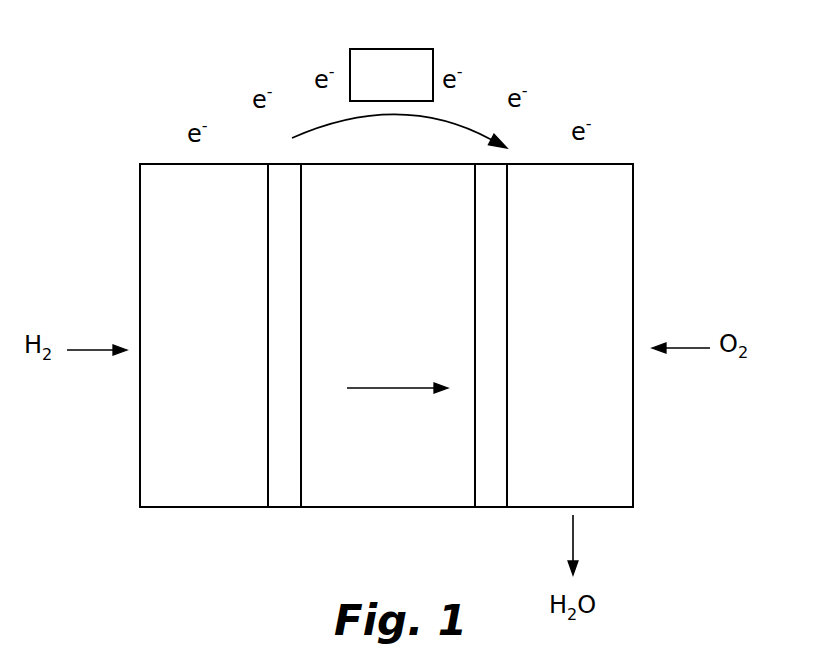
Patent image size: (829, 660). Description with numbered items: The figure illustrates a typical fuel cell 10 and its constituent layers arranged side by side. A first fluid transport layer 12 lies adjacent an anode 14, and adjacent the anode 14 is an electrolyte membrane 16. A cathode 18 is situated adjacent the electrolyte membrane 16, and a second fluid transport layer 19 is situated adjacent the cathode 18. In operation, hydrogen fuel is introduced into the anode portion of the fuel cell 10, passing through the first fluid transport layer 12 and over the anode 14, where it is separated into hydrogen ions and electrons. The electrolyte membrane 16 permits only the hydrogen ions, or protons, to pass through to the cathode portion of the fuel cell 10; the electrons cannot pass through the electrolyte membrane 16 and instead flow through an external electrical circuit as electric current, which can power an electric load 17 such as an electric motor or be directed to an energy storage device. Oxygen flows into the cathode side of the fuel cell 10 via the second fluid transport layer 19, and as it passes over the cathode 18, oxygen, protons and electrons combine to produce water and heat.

The fuel cell 10 is at (662, 73).
The first fluid transport layer 12 is at (211, 493).
The anode 14 is at (284, 507).
The electrolyte membrane 16 is at (405, 492).
The electric load 17 is at (402, 49).
The cathode 18 is at (493, 507).
The second fluid transport layer 19 is at (589, 492).